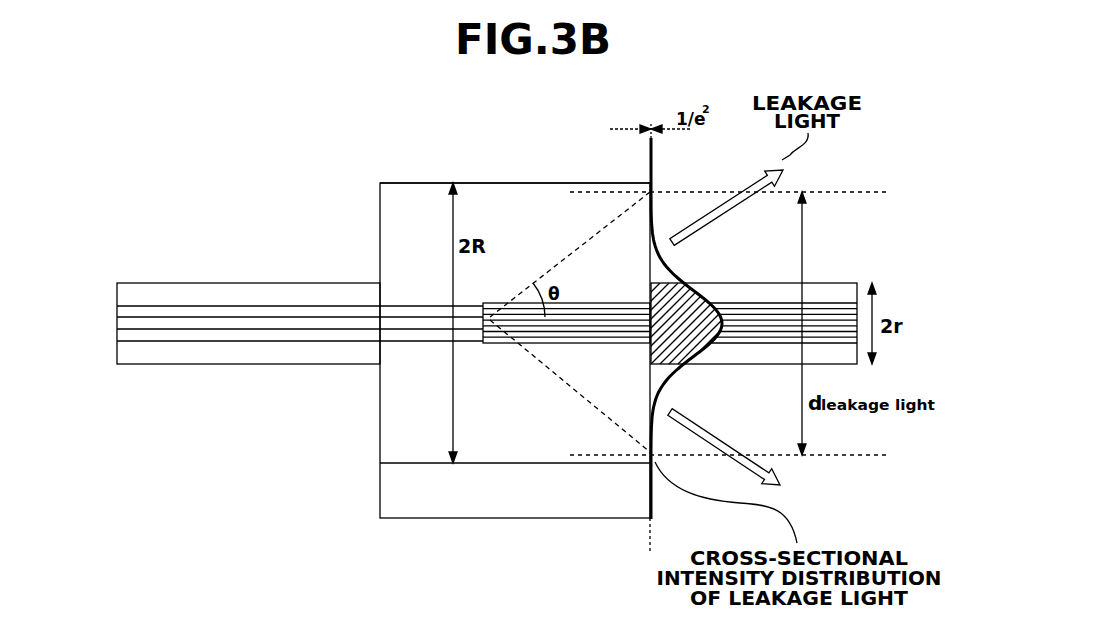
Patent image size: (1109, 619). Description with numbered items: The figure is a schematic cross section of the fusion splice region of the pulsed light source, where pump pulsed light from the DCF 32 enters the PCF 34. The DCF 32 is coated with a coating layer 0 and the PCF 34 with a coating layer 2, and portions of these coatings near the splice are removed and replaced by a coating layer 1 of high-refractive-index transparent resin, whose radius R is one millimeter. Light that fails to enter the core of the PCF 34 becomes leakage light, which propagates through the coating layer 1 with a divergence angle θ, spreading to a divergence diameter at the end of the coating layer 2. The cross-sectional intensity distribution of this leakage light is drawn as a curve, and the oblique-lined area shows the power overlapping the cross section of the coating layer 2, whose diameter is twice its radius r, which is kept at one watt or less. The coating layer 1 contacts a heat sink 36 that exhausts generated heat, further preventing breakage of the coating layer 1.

The coating layer 0 is at (197, 292).
The coating layer 1 is at (418, 191).
The coating layer 2 is at (834, 292).
The DCF 32 is at (300, 353).
The PCF 34 is at (783, 351).
The heat sink 36 is at (516, 518).